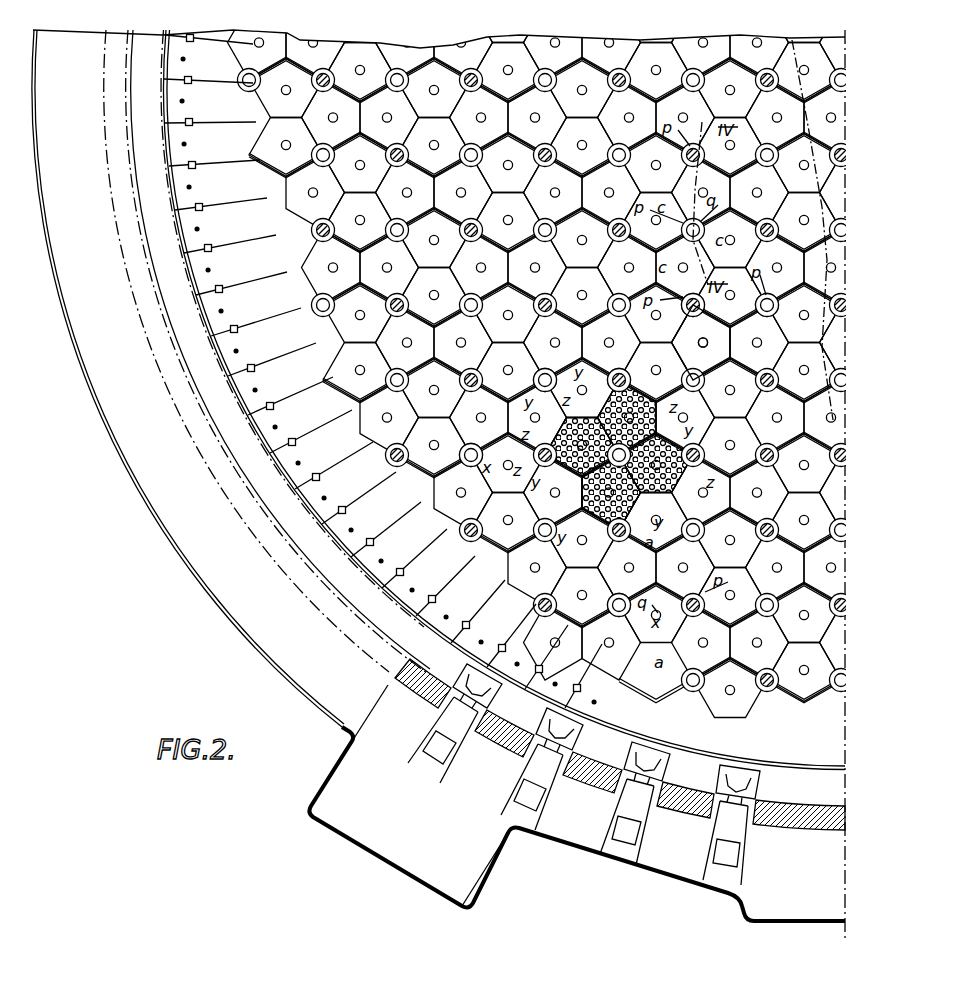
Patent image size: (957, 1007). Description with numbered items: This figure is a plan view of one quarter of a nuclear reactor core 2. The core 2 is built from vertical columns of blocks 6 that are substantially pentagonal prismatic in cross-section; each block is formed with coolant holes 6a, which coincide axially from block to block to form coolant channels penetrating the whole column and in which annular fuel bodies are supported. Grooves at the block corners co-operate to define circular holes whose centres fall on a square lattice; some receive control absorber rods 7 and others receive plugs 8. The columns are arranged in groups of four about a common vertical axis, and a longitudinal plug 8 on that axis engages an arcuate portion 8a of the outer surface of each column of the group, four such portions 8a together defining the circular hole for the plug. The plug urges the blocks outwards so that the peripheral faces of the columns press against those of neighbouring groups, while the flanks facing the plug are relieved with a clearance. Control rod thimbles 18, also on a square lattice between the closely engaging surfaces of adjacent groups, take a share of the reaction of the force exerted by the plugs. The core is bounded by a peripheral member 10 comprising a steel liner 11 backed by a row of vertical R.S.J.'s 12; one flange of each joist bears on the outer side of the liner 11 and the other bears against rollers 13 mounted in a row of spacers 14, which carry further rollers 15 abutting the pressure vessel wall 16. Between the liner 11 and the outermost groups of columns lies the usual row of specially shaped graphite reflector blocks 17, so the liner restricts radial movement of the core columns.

The reactor core 2 is at (553, 359).
The block 6 is at (698, 346).
The coolant hole 6a is at (612, 508).
The control absorber rod 7 is at (688, 313).
The plug 8 is at (538, 370).
The arcuate portion 8a is at (600, 482).
The peripheral member 10 is at (693, 836).
The steel liner 11 is at (482, 656).
The vertical R.S.J. 12 is at (540, 715).
The roller 13 is at (551, 754).
The spacer 14 is at (537, 778).
The further roller 15 is at (530, 800).
The pressure vessel wall 16 is at (522, 825).
The graphite reflector block 17 is at (546, 653).
The control rod thimble 18 is at (757, 450).